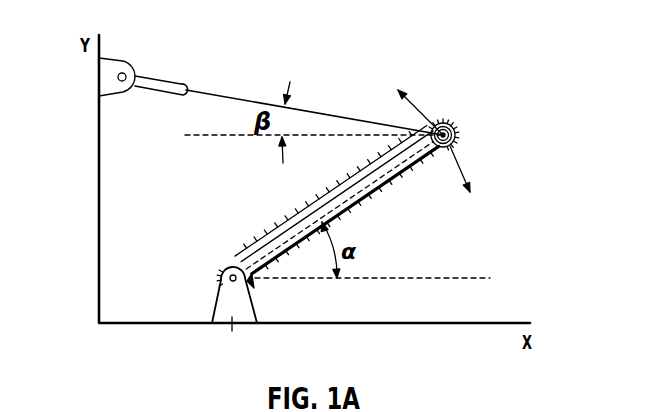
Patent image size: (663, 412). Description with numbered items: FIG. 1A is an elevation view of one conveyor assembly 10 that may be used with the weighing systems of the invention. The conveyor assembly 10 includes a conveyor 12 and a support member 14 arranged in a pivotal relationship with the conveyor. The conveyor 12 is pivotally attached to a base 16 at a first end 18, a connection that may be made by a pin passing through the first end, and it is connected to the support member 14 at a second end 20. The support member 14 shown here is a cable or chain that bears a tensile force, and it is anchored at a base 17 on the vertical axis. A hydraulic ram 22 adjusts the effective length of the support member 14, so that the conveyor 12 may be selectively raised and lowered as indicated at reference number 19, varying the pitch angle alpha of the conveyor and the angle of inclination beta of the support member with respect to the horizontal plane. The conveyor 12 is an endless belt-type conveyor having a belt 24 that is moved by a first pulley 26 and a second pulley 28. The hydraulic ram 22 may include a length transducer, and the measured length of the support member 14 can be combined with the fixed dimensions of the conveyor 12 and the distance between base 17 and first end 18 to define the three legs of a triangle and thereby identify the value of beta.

The conveyor assembly 10 is at (503, 52).
The conveyor 12 is at (372, 190).
The support member 14 is at (243, 100).
The base 16 is at (233, 315).
The base 17 is at (107, 80).
The first end 18 is at (218, 267).
The raising and lowering direction 19 is at (420, 100).
The second end 20 is at (455, 147).
The hydraulic ram 22 is at (164, 83).
The belt 24 is at (417, 180).
The first pulley 26 is at (228, 260).
The second pulley 28 is at (458, 125).